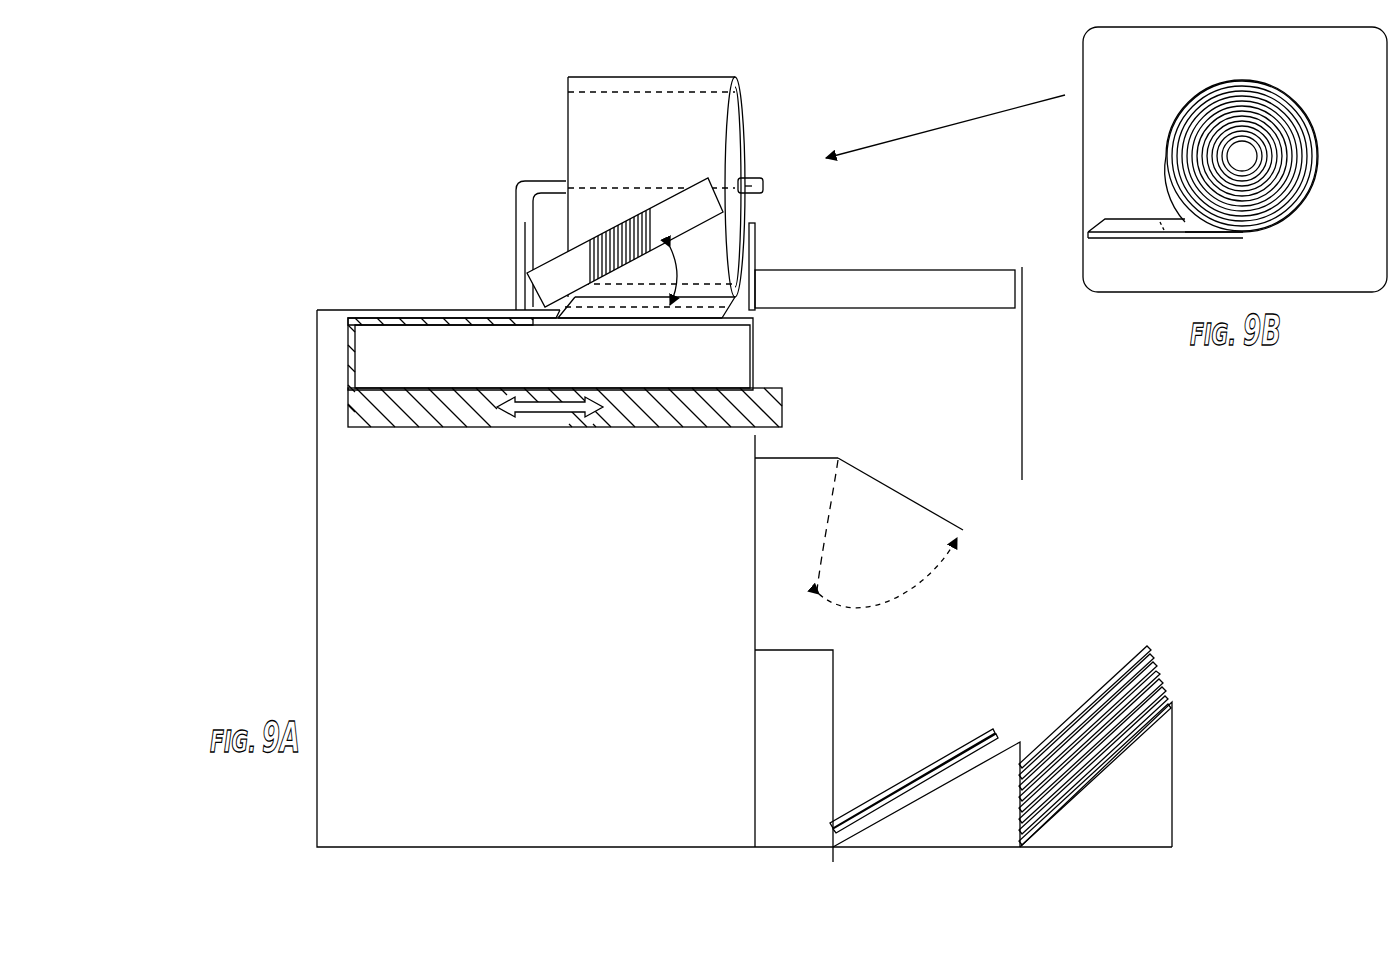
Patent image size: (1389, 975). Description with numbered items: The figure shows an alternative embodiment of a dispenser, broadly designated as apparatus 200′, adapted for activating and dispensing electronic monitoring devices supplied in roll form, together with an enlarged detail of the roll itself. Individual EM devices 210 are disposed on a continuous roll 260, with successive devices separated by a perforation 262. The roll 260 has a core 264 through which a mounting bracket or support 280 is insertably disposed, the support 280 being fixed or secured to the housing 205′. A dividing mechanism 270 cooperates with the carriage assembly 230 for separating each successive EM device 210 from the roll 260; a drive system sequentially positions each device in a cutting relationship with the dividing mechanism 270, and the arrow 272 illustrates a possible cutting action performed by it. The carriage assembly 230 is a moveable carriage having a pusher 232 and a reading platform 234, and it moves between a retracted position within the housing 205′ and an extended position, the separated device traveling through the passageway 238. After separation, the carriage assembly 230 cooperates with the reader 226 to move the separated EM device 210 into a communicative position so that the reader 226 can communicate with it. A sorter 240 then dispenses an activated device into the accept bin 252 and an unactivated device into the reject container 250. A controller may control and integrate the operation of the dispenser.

In FIG. 9A, the apparatus 200′ is at (238, 304).
In FIG. 9A, the housing 205′ is at (350, 602).
In FIG. 9A, the EM device 210 is at (720, 137).
In FIG. 9B, the EM device 210 is at (1182, 222).
In FIG. 9A, the reader 226 is at (980, 270).
In FIG. 9A, the carriage assembly 230 is at (346, 360).
In FIG. 9A, the pusher 232 is at (400, 322).
In FIG. 9A, the reading platform 234 is at (783, 405).
In FIG. 9A, the passageway 238 is at (764, 319).
In FIG. 9A, the sorter 240 is at (890, 487).
In FIG. 9A, the reject container 250 is at (930, 822).
In FIG. 9A, the accept bin 252 is at (1120, 822).
In FIG. 9A, the continuous roll 260 is at (720, 73).
In FIG. 9B, the continuous roll 260 is at (1312, 93).
In FIG. 9A, the perforation 262 is at (622, 85).
In FIG. 9B, the perforation 262 is at (1165, 222).
In FIG. 9B, the core 264 is at (1240, 158).
In FIG. 9A, the dividing mechanism 270 is at (553, 272).
In FIG. 9A, the arrow 272 is at (678, 249).
In FIG. 9A, the mounting bracket or support 280 is at (532, 183).